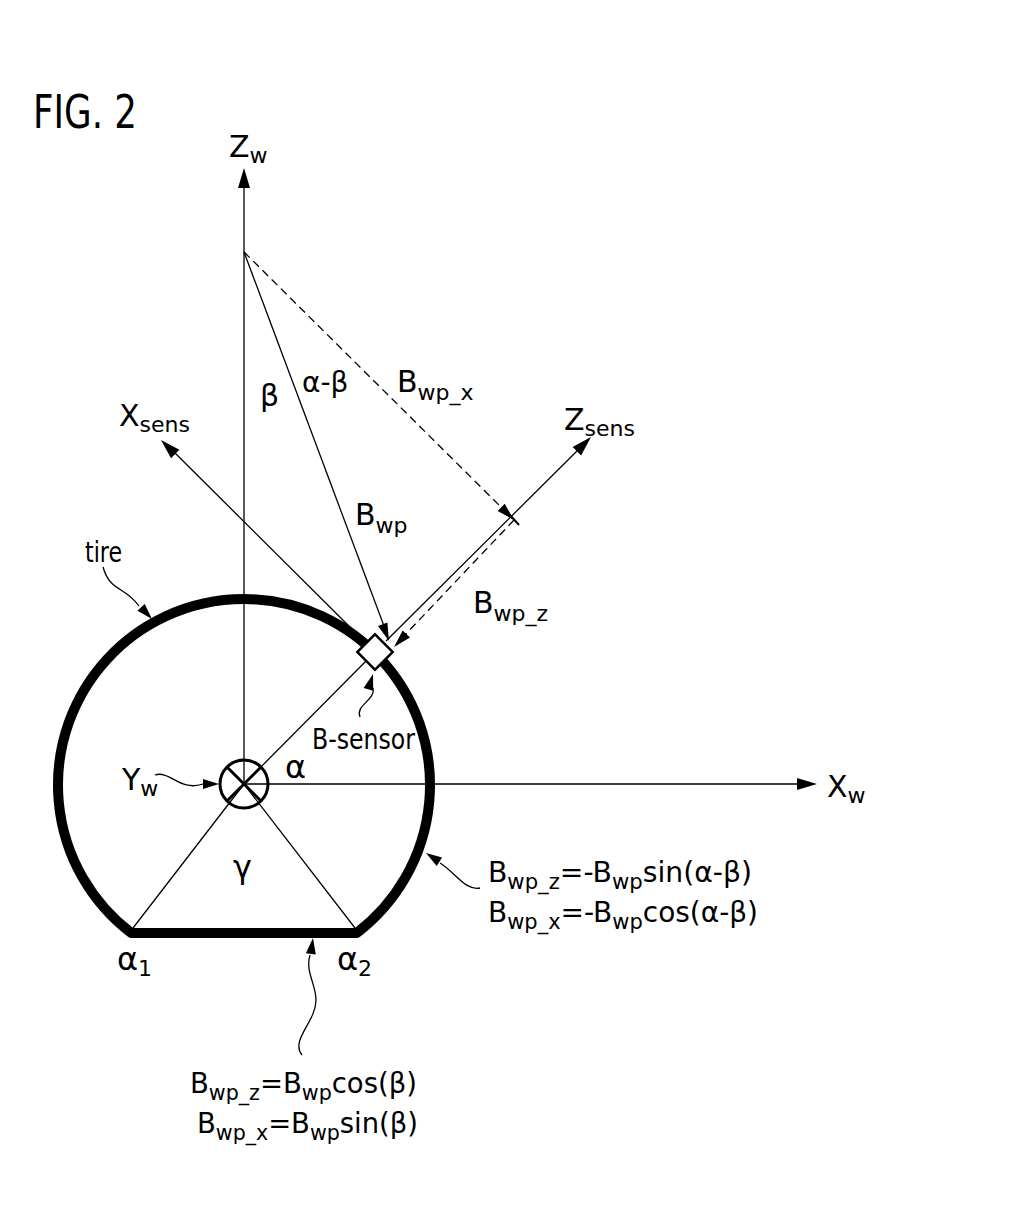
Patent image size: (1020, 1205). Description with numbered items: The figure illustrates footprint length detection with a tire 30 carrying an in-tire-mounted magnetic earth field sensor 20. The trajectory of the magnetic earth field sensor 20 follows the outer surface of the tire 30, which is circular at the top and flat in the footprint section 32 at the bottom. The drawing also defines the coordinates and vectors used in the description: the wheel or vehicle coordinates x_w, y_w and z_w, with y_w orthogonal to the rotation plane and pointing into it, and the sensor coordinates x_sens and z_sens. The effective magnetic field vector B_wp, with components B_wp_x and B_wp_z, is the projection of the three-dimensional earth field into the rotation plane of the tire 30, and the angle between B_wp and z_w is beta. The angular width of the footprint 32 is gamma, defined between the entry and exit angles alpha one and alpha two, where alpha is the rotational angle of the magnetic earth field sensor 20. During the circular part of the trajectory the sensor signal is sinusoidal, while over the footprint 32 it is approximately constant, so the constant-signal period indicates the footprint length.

The magnetic earth field sensor 20 is at (388, 666).
The tire 30 is at (78, 878).
The footprint 32 is at (353, 985).